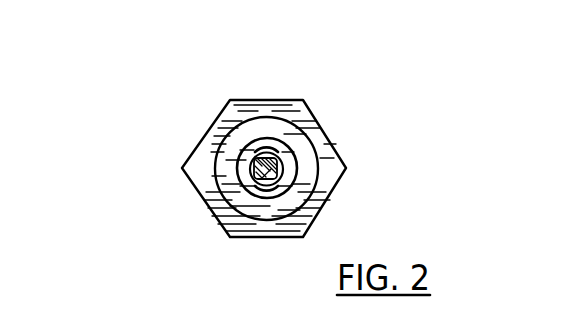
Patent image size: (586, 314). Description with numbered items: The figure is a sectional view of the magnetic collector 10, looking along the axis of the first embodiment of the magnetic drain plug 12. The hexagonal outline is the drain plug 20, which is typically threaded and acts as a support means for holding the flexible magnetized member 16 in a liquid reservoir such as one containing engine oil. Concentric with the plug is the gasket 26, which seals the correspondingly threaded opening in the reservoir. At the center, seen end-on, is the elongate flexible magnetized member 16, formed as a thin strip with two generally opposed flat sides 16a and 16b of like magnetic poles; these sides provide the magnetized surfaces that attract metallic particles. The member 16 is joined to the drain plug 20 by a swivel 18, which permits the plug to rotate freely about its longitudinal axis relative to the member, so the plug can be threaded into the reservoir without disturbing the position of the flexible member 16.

The magnetic collector 10 is at (378, 193).
The magnetic drain plug 12 is at (152, 144).
The flexible magnetized member 16 is at (278, 160).
The flat side 16a is at (268, 151).
The flat side 16b is at (266, 186).
The swivel 18 is at (260, 147).
The drain plug 20 is at (301, 100).
The gasket 26 is at (305, 130).